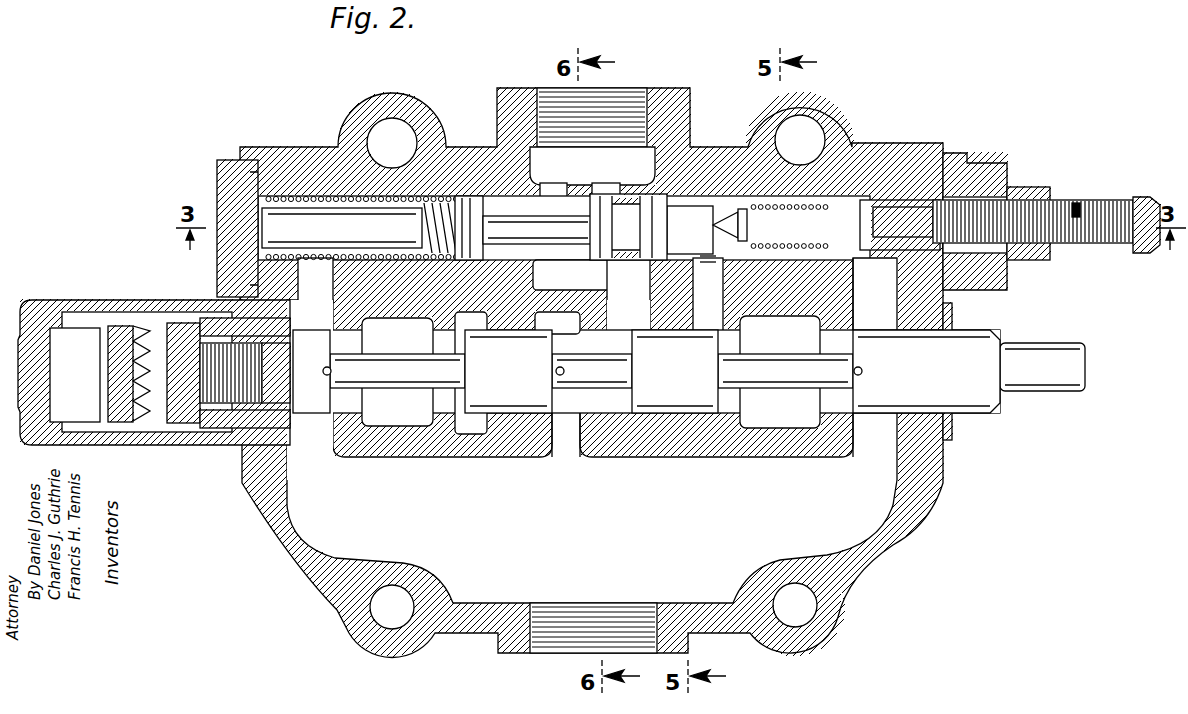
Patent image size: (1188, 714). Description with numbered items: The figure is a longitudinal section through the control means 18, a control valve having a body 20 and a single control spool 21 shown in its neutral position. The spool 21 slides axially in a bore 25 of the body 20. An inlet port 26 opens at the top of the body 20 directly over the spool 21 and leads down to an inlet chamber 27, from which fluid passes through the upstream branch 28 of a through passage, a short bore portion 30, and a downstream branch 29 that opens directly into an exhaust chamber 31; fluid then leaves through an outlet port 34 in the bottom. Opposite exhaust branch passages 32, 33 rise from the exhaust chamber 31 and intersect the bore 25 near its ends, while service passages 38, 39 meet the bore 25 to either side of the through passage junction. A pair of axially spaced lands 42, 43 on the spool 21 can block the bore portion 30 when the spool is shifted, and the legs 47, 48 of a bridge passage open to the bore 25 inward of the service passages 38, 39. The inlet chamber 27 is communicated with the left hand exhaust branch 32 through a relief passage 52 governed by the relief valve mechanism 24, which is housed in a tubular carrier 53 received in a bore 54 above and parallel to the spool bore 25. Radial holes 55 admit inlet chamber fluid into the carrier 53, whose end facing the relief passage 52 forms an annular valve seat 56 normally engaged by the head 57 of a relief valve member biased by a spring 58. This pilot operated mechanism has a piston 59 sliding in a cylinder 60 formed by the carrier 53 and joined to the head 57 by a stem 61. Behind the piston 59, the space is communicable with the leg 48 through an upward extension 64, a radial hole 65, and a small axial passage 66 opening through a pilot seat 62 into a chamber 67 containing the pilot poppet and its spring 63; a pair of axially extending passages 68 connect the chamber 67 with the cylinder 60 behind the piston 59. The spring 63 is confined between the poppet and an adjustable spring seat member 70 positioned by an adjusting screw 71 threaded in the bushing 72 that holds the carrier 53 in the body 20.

The control means 18 is at (252, 98).
The body 20 is at (893, 140).
The control spool 21 is at (972, 416).
The relief valve mechanism 24 is at (1012, 181).
The bore 25 is at (440, 410).
The inlet port 26 is at (560, 108).
The inlet chamber 27 is at (540, 178).
The upstream branch 28 is at (636, 327).
The downstream branch 29 is at (550, 430).
The bore portion 30 is at (570, 430).
The exhaust chamber 31 is at (596, 531).
The exhaust branch passage 32 is at (314, 443).
The exhaust branch passage 33 is at (878, 439).
The outlet port 34 is at (598, 615).
The service passage 38 is at (406, 342).
The service passage 39 is at (782, 380).
The land 42 is at (510, 381).
The land 43 is at (682, 381).
The leg 47 is at (478, 329).
The leg 48 is at (718, 327).
The relief passage 52 is at (358, 190).
The tubular carrier 53 is at (626, 270).
The bore 54 is at (630, 198).
The radial holes 55 is at (552, 286).
The annular valve seat 56 is at (470, 264).
The head 57 is at (490, 226).
The spring 58 is at (318, 262).
The piston 59 is at (603, 228).
The cylinder 60 is at (578, 268).
The stem 61 is at (526, 232).
The annular valve seat 62 is at (711, 274).
The spring 63 is at (850, 250).
The upward extension 64 is at (718, 309).
The radial hole 65 is at (706, 244).
The axial passage 66 is at (700, 208).
The chamber 67 is at (805, 248).
The axially extending passages 68 is at (692, 195).
The adjustable spring seat member 70 is at (904, 230).
The adjusting screw 71 is at (1076, 200).
The bushing 72 is at (985, 165).